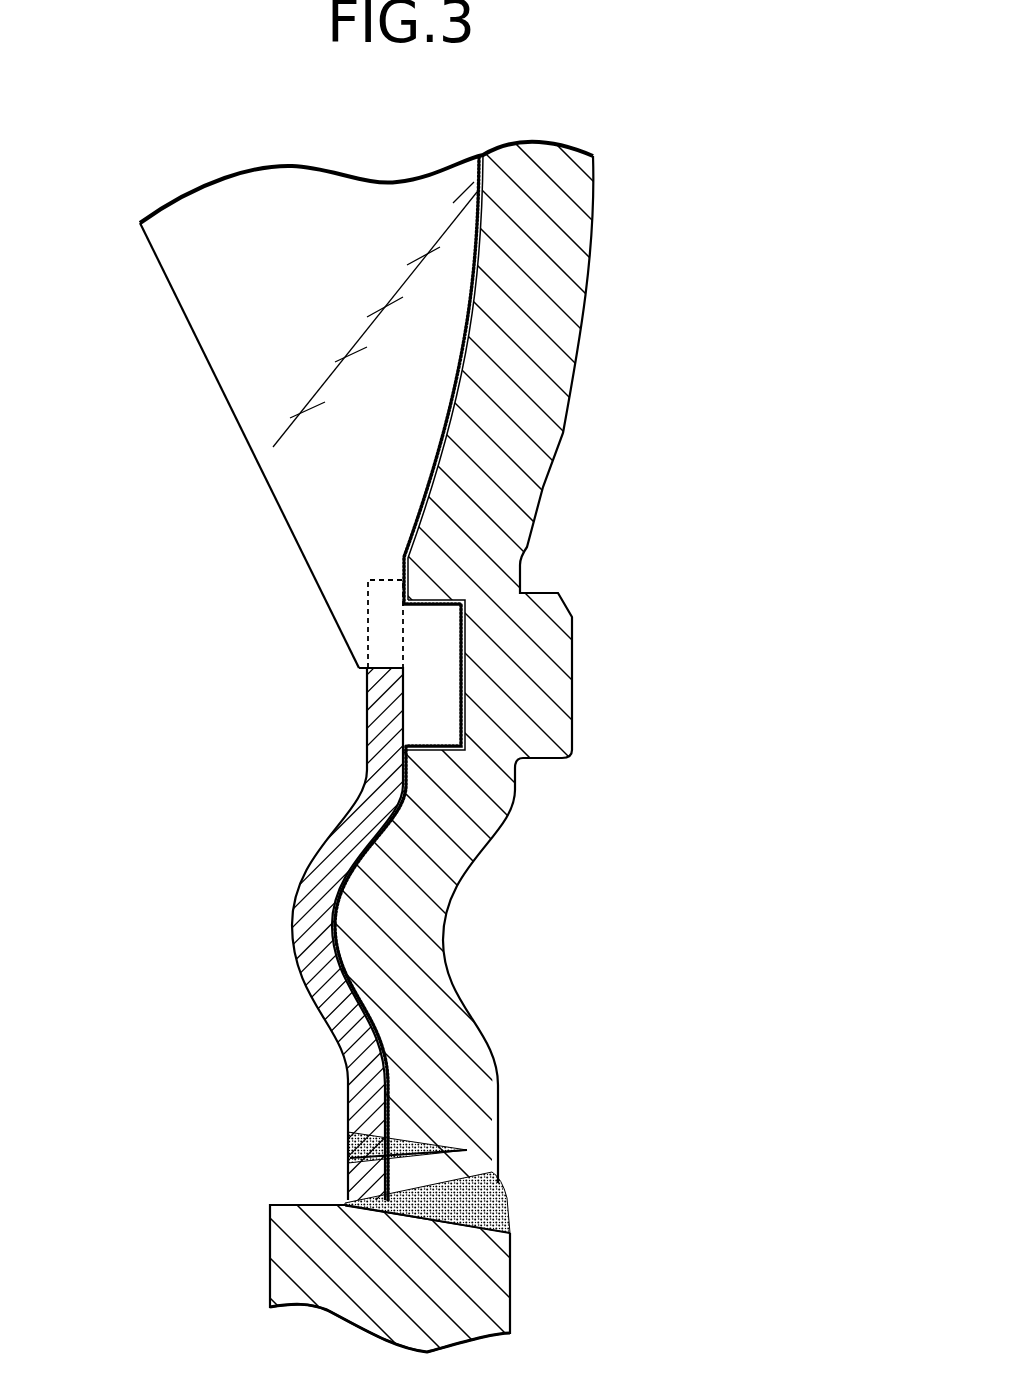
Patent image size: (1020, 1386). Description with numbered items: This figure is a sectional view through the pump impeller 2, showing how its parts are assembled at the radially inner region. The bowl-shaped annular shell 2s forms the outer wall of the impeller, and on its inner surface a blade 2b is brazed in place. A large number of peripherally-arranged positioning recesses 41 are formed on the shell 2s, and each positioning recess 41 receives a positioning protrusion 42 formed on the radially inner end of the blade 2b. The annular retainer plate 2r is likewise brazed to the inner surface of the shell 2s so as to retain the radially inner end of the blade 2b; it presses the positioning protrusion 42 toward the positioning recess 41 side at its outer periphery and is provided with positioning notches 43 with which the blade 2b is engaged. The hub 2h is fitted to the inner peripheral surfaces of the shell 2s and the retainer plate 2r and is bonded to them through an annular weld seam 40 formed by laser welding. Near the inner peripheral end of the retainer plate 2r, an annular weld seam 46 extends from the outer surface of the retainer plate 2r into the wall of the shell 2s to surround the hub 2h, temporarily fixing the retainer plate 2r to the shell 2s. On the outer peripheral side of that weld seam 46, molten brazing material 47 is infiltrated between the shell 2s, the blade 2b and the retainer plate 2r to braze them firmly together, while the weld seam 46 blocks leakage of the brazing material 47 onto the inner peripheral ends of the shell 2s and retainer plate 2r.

The pump impeller 2 is at (605, 245).
The blade 2b is at (232, 327).
The shell 2s is at (555, 365).
The retainer plate 2r is at (323, 869).
The hub 2h is at (457, 1287).
The weld seam 40 is at (507, 1203).
The positioning recess 41 is at (463, 660).
The positioning protrusion 42 is at (445, 705).
The positioning notch 43 is at (369, 668).
The weld seam 46 is at (413, 1140).
The brazing material 47 is at (371, 1011).